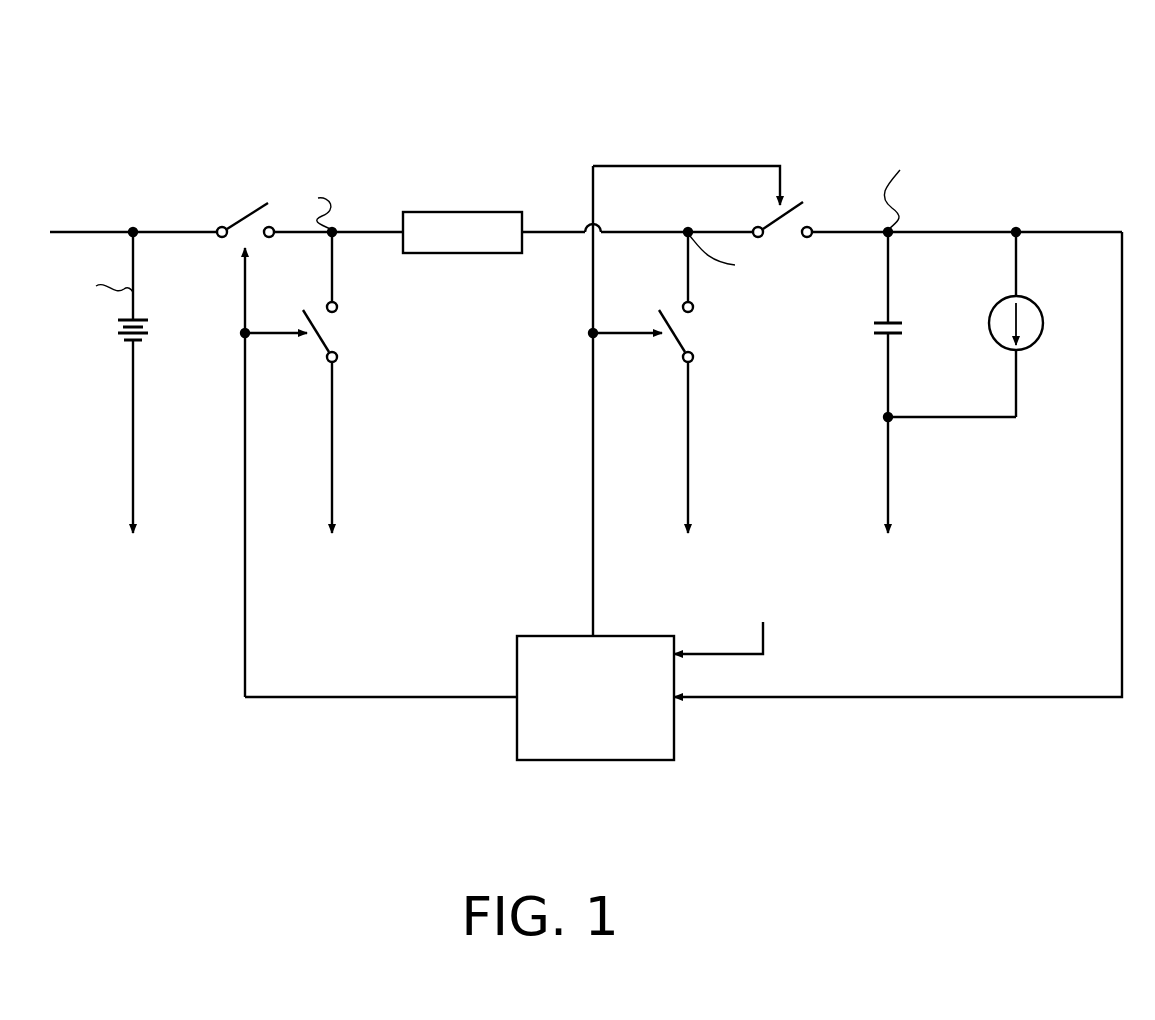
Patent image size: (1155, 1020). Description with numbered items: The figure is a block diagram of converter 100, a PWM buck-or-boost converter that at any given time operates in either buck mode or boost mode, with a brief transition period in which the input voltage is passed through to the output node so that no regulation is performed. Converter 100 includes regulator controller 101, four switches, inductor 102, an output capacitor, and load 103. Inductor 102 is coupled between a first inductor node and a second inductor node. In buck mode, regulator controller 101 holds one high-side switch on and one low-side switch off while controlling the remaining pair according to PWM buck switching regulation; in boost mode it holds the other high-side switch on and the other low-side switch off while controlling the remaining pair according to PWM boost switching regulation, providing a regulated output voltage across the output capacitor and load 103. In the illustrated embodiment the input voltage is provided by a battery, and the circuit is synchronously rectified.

The converter 100 is at (637, 40).
The regulator controller 101 is at (578, 744).
The inductor 102 is at (452, 254).
The load 103 is at (1040, 348).